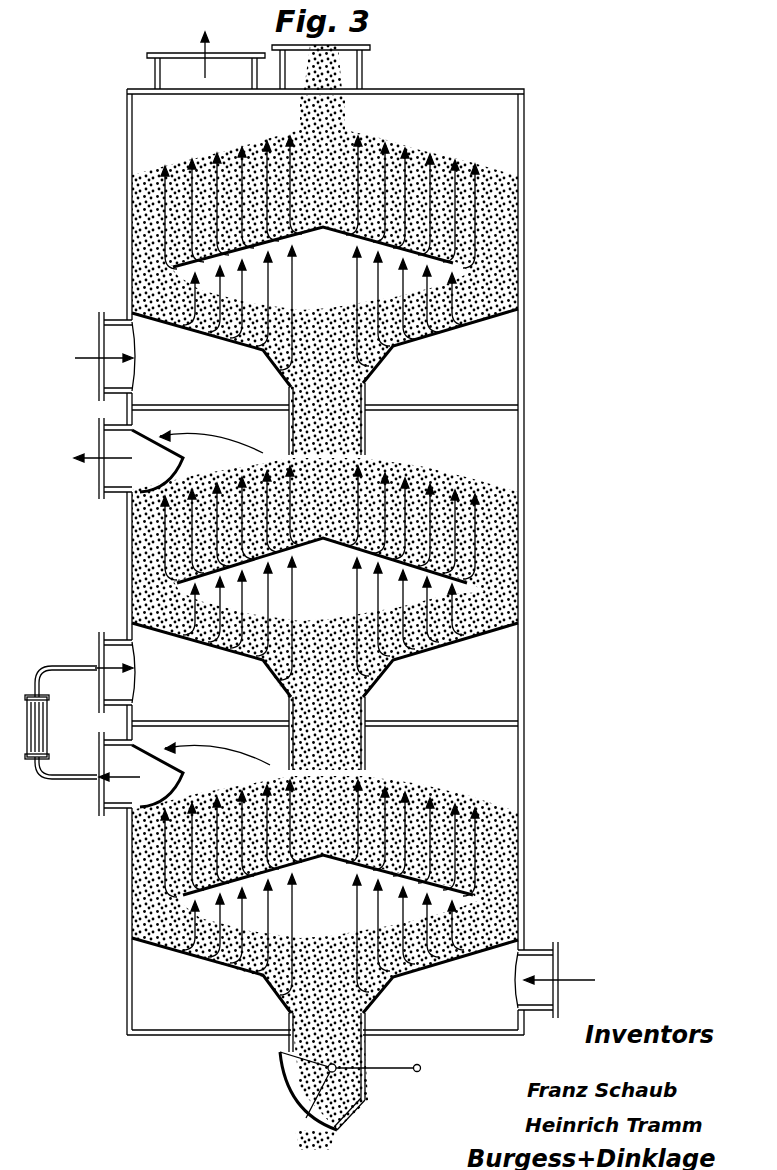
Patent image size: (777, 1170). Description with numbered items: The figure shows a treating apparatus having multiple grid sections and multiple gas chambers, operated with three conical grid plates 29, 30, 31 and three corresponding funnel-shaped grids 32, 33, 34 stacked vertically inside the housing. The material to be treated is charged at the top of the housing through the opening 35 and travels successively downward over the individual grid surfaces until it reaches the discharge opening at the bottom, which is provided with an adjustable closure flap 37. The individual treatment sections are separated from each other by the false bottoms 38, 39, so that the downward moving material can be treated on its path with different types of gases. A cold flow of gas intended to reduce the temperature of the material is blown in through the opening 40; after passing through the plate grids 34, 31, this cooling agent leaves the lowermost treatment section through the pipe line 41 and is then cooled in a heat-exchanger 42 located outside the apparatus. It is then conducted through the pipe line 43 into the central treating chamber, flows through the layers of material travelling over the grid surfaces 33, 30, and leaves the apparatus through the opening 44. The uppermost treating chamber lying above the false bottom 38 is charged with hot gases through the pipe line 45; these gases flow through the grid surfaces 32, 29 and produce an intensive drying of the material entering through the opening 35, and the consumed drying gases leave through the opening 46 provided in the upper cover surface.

The conical grid plate 29 is at (405, 241).
The conical grid plate 30 is at (410, 556).
The conical grid plate 31 is at (432, 868).
The funnel-shaped grid 32 is at (437, 342).
The funnel-shaped grid 33 is at (470, 627).
The funnel-shaped grid 34 is at (440, 965).
The opening 35 is at (365, 72).
The adjustable closure flap 37 is at (280, 1077).
The false bottom 38 is at (460, 405).
The false bottom 39 is at (452, 722).
The opening 40 is at (535, 968).
The pipe line 41 is at (125, 785).
The heat-exchanger 42 is at (38, 737).
The pipe line 43 is at (112, 665).
The opening 44 is at (117, 453).
The pipe line 45 is at (110, 352).
The opening 46 is at (180, 70).